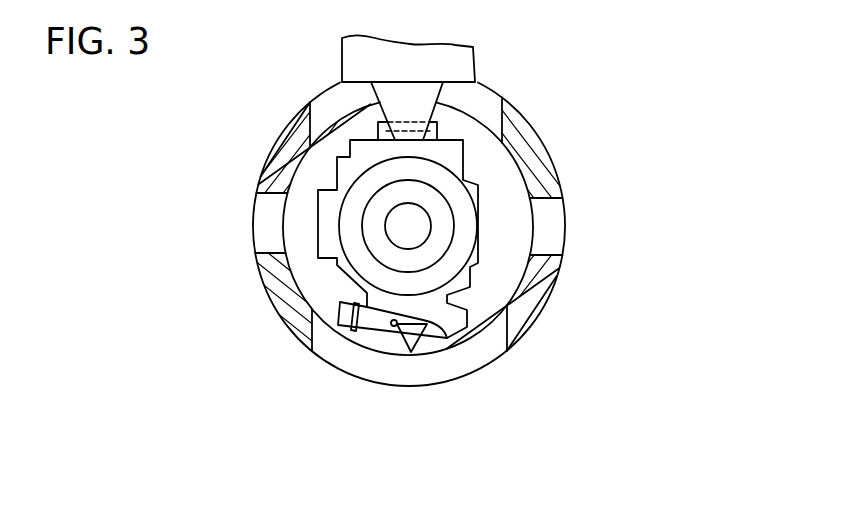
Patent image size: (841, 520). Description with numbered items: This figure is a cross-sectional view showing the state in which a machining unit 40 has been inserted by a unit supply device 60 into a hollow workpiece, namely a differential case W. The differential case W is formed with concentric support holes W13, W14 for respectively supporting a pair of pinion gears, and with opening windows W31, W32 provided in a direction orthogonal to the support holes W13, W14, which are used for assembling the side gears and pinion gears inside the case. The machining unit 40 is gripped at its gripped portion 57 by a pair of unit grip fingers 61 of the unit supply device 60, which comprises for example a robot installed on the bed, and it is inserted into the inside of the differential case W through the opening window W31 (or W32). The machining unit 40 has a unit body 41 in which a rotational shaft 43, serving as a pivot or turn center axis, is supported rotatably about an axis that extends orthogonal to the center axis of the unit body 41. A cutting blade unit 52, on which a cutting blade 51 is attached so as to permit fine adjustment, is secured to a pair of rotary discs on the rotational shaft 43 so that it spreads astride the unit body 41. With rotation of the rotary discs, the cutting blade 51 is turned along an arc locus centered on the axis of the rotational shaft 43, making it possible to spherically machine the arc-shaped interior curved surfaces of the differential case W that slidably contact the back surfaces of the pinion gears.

The differential case W is at (558, 306).
The opening window W31 is at (309, 110).
The opening window W32 is at (505, 331).
The support hole W13 is at (270, 195).
The support hole W14 is at (560, 199).
The unit supply device 60 is at (337, 56).
The unit grip fingers 61 is at (428, 92).
The gripped portion 57 is at (437, 133).
The unit body 41 is at (345, 178).
The machining unit 40 is at (493, 193).
The rotational shaft 43 is at (395, 229).
The cutting blade unit 52 is at (370, 332).
The cutting blade 51 is at (405, 323).